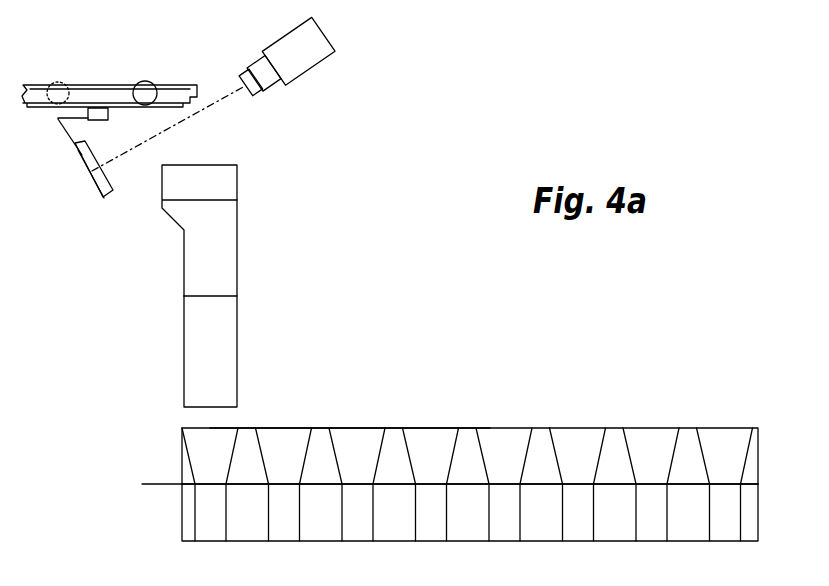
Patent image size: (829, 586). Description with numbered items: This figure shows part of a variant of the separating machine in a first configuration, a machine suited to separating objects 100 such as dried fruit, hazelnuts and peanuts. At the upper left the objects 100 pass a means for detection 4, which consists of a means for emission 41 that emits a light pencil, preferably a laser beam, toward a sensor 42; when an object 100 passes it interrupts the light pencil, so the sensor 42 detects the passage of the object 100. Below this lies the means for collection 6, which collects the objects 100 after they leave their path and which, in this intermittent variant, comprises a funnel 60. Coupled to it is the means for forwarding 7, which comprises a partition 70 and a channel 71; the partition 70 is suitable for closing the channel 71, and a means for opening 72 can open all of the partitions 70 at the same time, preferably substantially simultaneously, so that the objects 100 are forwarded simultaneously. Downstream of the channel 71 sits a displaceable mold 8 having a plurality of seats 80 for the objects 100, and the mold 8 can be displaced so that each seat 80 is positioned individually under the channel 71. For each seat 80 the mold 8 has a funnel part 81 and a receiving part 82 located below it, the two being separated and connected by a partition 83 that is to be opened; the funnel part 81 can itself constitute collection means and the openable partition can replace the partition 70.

The objects 100 is at (148, 83).
The means for detection 4 is at (322, 56).
The means for emission 41 is at (310, 48).
The sensor 42 is at (87, 165).
The means for collection 6 is at (235, 286).
The funnel 60 is at (200, 273).
The partition 70 is at (235, 287).
The means for opening 72 is at (182, 295).
The means for forwarding 7 is at (246, 351).
The channel 71 is at (198, 377).
The mold 8 is at (417, 452).
The seats 80 is at (488, 420).
The funnel part 81 is at (205, 458).
The receiving part 82 is at (210, 523).
The partition 83 is at (157, 483).